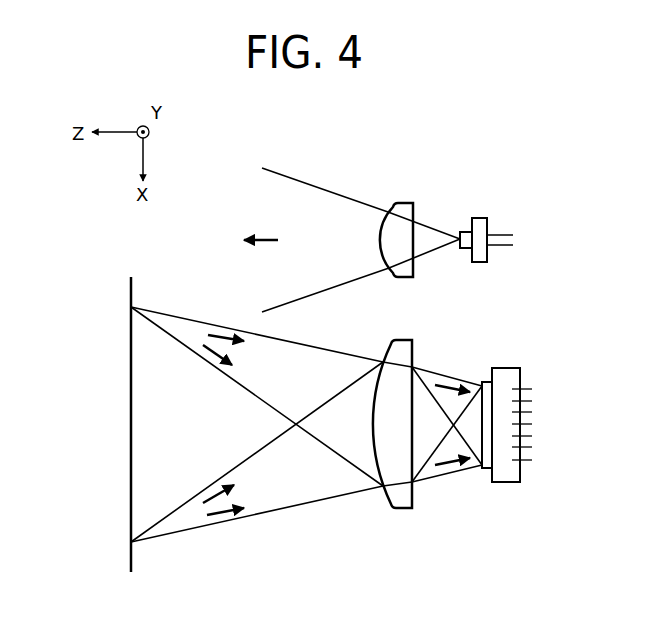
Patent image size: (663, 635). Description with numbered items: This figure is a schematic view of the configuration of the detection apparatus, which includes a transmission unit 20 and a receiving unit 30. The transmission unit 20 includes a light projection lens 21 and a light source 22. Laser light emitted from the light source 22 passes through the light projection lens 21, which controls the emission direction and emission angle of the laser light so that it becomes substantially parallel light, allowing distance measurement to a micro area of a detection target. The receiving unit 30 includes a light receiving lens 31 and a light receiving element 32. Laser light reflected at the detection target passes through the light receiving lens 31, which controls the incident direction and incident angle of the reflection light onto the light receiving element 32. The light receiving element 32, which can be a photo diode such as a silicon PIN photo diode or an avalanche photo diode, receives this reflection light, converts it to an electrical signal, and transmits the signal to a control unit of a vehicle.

The transmission unit 20 is at (497, 151).
The light projection lens 21 is at (397, 203).
The light source 22 is at (478, 208).
The receiving unit 30 is at (525, 564).
The light receiving lens 31 is at (396, 509).
The light receiving element 32 is at (500, 483).